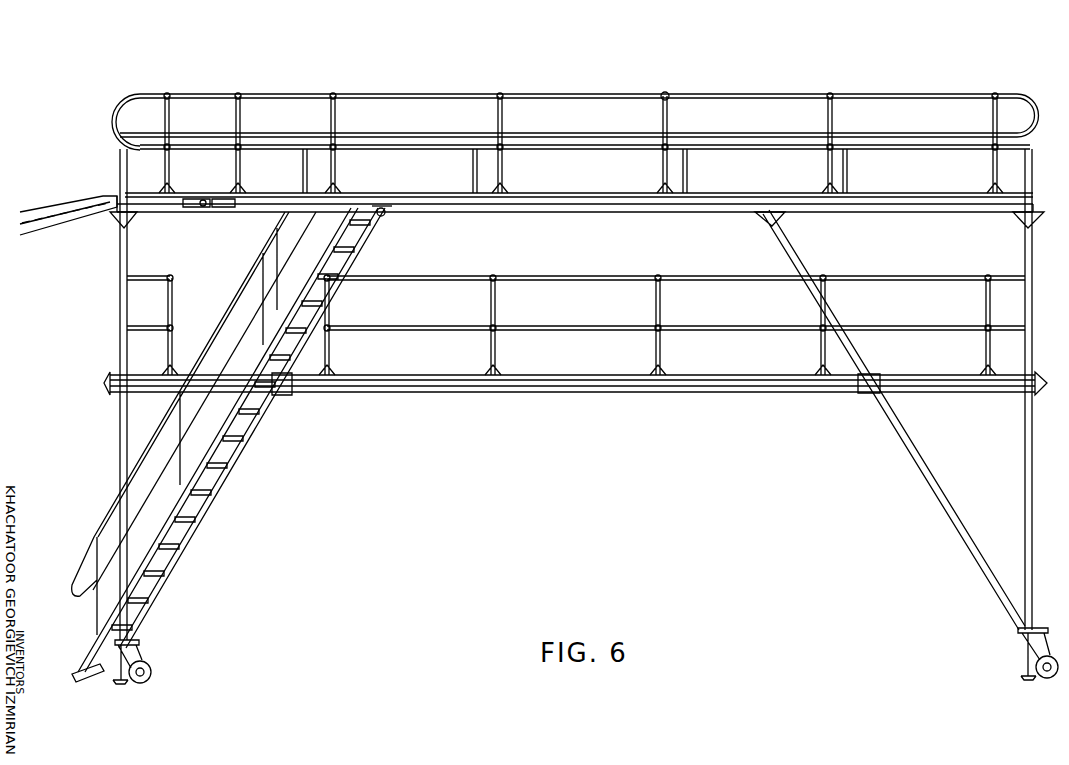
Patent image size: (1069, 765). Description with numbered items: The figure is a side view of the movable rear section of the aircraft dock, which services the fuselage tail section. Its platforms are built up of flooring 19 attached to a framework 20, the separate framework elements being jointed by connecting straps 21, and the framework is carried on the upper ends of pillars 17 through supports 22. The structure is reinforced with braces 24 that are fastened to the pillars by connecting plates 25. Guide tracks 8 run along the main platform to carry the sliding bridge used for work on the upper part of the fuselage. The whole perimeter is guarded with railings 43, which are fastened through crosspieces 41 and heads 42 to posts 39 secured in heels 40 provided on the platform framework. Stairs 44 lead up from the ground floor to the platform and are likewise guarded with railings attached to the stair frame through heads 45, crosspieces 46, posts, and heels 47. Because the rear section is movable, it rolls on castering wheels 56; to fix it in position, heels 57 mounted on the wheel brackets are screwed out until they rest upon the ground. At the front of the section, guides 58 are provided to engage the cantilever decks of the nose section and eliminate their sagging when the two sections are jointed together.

The guide tracks 8 is at (927, 133).
The pillars 17 is at (117, 256).
The flooring 19 is at (224, 196).
The framework 20 is at (156, 204).
The connecting straps 21 is at (206, 198).
The supports 22 is at (383, 212).
The braces 24 is at (390, 381).
The connecting plates 25 is at (283, 394).
The posts 39 is at (503, 120).
The heels 40 is at (497, 187).
The crosspieces 41 is at (665, 146).
The heads 42 is at (668, 96).
The railings 43 is at (738, 94).
The stairs 44 is at (218, 424).
The heads 45 is at (118, 277).
The crosspieces 46 is at (266, 292).
The heels 47 is at (262, 342).
The castering wheels 56 is at (132, 643).
The heels 57 is at (113, 682).
The guides 58 is at (72, 205).